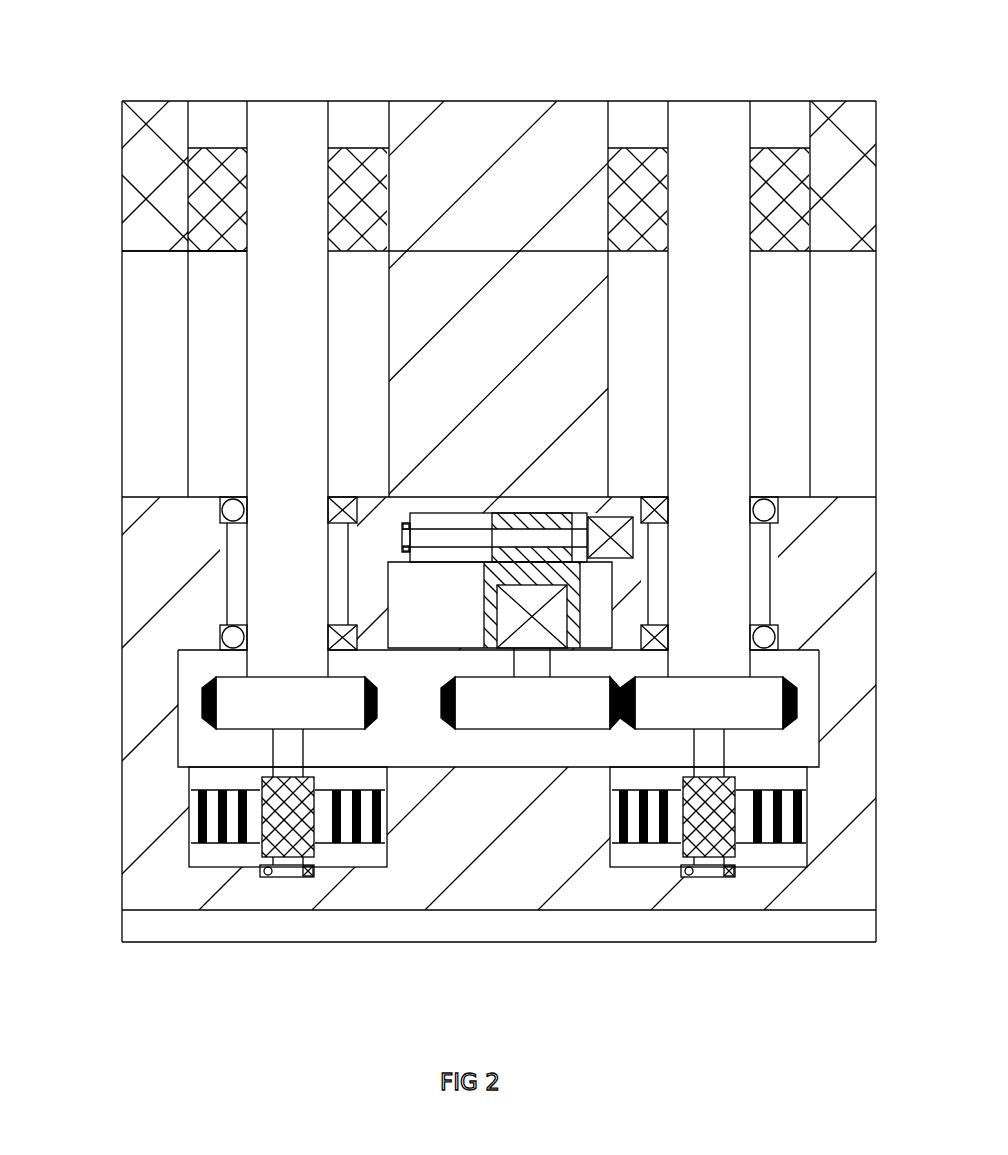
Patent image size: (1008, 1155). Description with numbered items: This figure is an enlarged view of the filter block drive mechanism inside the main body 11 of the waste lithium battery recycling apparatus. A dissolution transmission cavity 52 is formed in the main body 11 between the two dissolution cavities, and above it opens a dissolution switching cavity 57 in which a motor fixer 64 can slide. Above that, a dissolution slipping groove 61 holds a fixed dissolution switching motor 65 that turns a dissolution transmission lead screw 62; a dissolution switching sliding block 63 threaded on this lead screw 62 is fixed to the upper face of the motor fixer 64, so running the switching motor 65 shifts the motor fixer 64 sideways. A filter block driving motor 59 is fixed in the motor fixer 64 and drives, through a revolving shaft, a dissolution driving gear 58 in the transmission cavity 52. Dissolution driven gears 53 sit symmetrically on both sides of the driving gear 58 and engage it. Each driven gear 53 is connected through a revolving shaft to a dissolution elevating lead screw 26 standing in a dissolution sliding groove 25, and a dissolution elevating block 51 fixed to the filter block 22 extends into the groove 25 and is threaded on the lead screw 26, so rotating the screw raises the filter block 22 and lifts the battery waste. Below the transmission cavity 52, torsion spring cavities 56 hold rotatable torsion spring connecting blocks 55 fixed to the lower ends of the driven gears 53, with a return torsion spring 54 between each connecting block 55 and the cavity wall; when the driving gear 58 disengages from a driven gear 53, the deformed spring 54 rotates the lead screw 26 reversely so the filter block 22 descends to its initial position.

The main body 11 is at (495, 157).
The filter block 22 is at (147, 168).
The dissolution elevating block 51 is at (210, 207).
The dissolution sliding groove 25 is at (220, 303).
The dissolution elevating lead screw 26 is at (293, 332).
The dissolution transmission cavity 52 is at (197, 668).
The dissolution driven gear 53 is at (238, 700).
The return torsion spring 54 is at (217, 832).
The torsion spring connecting block 55 is at (287, 832).
The torsion spring cavity 56 is at (348, 850).
The dissolution switching cavity 57 is at (413, 615).
The dissolution driving gear 58 is at (498, 702).
The filter block driving motor 59 is at (528, 635).
The dissolution slipping groove 61 is at (428, 522).
The dissolution transmission lead screw 62 is at (442, 540).
The dissolution switching sliding block 63 is at (516, 525).
The motor fixer 64 is at (541, 578).
The dissolution switching motor 65 is at (620, 540).